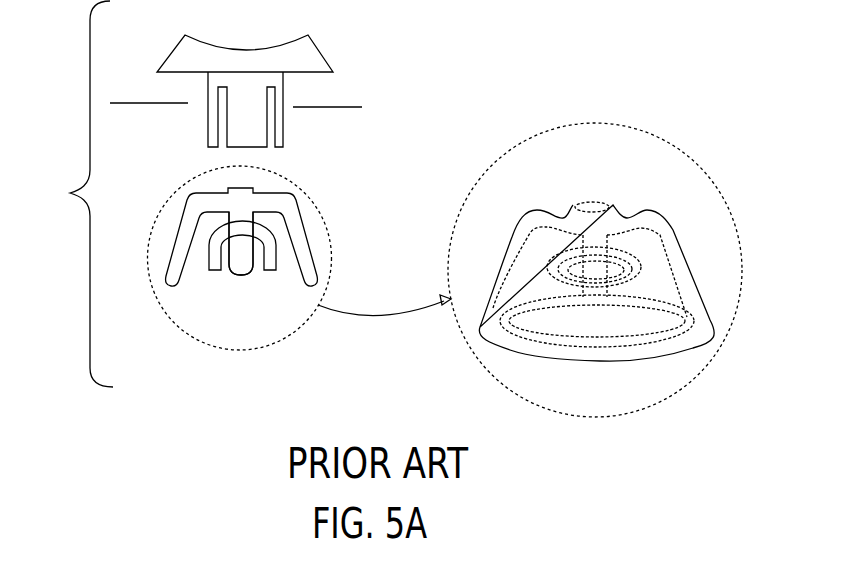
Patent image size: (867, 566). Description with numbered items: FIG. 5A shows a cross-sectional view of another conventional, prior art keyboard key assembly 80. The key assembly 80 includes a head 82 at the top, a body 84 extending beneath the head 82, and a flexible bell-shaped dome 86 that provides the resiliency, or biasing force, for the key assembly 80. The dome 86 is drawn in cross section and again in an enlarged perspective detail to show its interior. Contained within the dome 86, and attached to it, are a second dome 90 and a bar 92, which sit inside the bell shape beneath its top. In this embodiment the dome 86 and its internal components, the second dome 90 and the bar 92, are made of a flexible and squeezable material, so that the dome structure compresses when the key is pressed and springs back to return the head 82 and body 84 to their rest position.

The key assembly 80 is at (70, 193).
The head 82 is at (307, 50).
The body 84 is at (283, 127).
The flexible bell-shaped dome 86 is at (188, 230).
The second dome 90 is at (209, 263).
The bar 92 is at (240, 275).